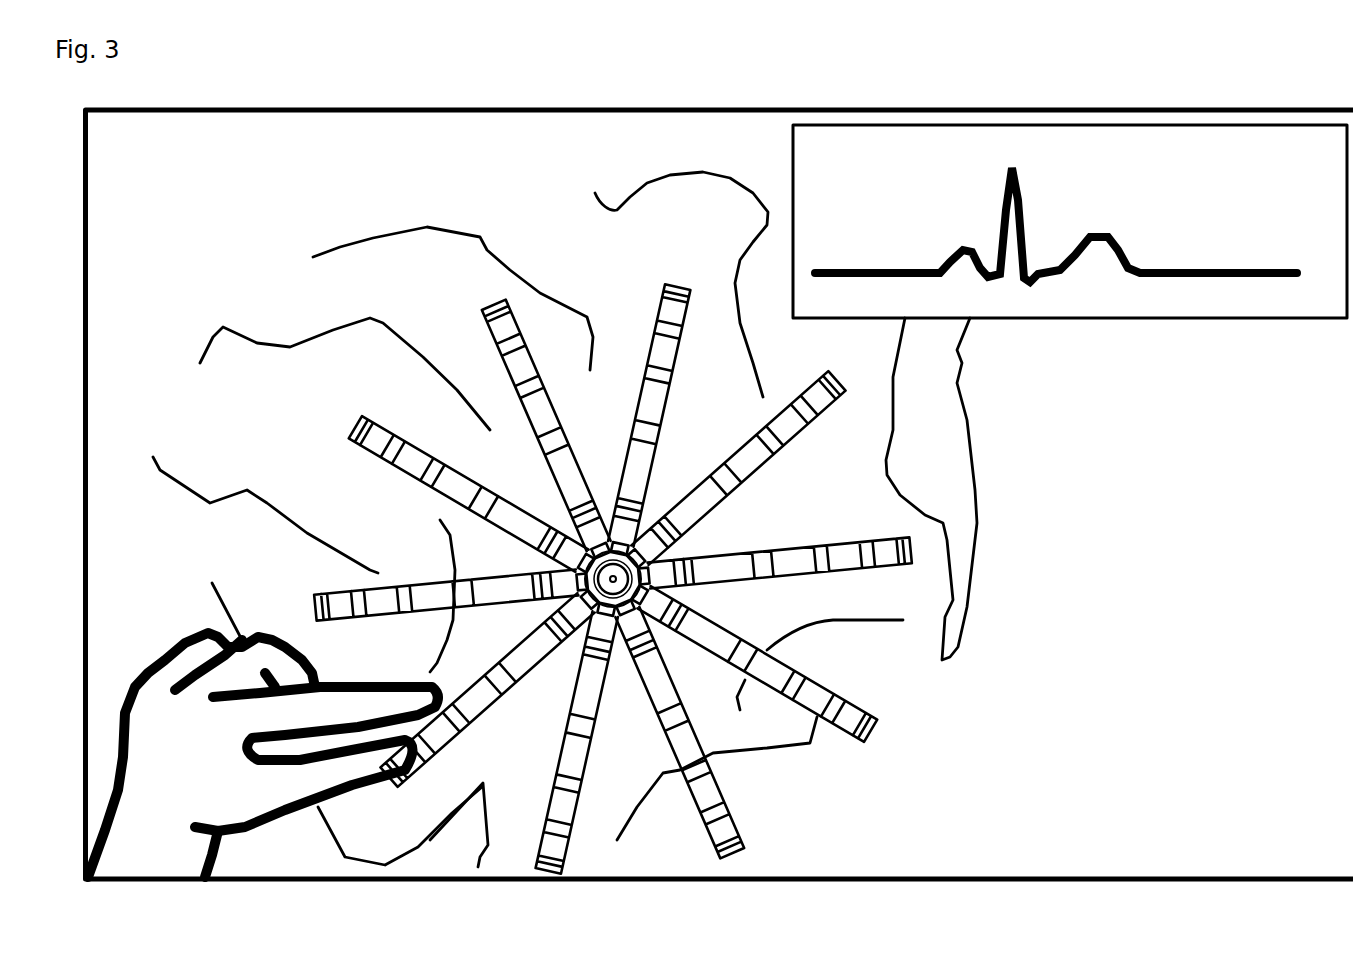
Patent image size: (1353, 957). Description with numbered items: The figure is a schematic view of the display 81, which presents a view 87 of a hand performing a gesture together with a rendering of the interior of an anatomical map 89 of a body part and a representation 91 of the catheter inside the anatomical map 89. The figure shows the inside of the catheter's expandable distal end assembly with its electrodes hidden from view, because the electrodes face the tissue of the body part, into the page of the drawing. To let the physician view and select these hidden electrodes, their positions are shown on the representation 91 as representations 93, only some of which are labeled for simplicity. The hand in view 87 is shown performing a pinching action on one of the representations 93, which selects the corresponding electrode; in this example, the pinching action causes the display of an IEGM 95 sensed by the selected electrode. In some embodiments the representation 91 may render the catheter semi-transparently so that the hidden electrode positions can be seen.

The display 81 is at (732, 107).
The view of a hand 87 is at (173, 653).
The anatomical map 89 is at (268, 316).
The representation of the catheter 91 is at (660, 578).
The representations of electrodes 93 is at (457, 470).
The IEGM 95 is at (1229, 280).